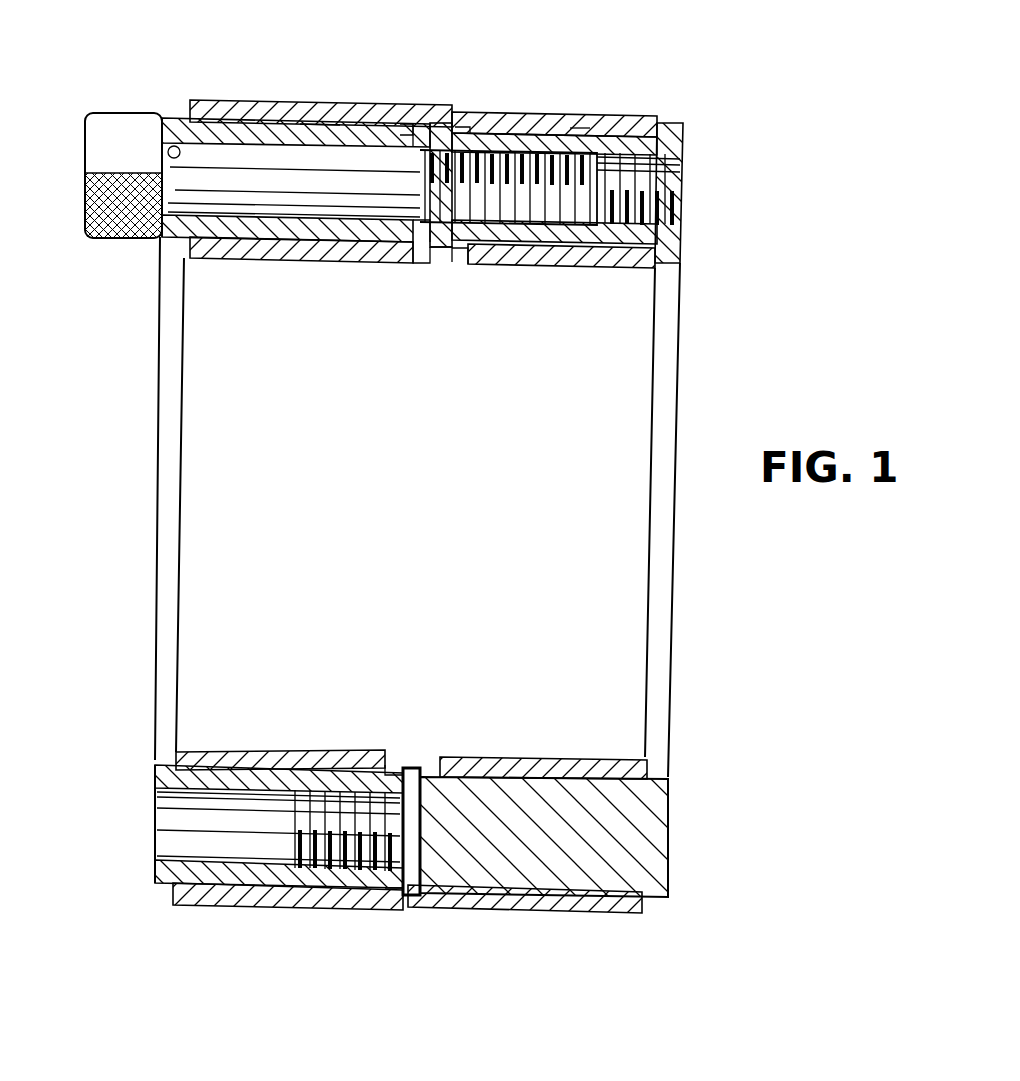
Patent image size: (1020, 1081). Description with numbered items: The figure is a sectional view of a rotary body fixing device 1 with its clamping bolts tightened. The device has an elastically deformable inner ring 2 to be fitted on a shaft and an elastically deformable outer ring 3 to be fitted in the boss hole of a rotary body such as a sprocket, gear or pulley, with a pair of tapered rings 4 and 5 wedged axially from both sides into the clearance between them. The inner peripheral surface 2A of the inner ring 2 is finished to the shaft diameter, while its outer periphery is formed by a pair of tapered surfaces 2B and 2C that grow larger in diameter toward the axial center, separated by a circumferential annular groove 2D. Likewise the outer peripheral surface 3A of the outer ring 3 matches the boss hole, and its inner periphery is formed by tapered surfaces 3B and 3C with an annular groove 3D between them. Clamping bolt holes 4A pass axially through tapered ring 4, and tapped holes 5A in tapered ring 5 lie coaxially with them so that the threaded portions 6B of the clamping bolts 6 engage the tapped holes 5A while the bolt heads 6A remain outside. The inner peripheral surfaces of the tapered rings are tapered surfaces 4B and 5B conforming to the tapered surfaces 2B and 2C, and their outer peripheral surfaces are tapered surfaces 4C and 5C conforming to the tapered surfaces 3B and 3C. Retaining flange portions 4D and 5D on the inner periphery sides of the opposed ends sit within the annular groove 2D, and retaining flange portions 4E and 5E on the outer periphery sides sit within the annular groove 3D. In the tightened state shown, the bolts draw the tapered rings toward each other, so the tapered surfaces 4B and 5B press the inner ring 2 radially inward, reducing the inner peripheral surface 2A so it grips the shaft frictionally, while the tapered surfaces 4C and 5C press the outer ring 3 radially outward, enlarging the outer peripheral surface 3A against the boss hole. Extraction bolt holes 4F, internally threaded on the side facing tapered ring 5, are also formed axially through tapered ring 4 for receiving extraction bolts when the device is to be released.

The rotary body fixing device 1 is at (624, 93).
The inner ring 2 is at (533, 258).
The inner peripheral surface 2A is at (360, 250).
The tapered surface 2B is at (266, 243).
The tapered surface 2C is at (590, 254).
The annular groove 2D is at (453, 252).
The outer ring 3 is at (292, 110).
The outer peripheral surface 3A is at (535, 112).
The tapered surface 3B is at (322, 133).
The tapered surface 3C is at (578, 127).
The annular groove 3D is at (472, 130).
The tapered ring 4 is at (153, 746).
The clamping bolt hole 4A is at (152, 148).
The tapered surface 4B is at (223, 235).
The tapered surface 4C is at (252, 126).
The retaining flange portion 4D is at (397, 252).
The retaining flange portion 4E is at (400, 127).
The extraction bolt hole 4F is at (205, 858).
The tapered ring 5 is at (672, 803).
The tapped hole 5A is at (678, 176).
The tapered surface 5B is at (676, 237).
The tapered surface 5C is at (683, 122).
The retaining flange portion 5D is at (440, 262).
The retaining flange portion 5E is at (447, 128).
The clamping bolt 6 is at (208, 168).
The bolt head 6A is at (112, 135).
The threaded portion 6B is at (337, 238).